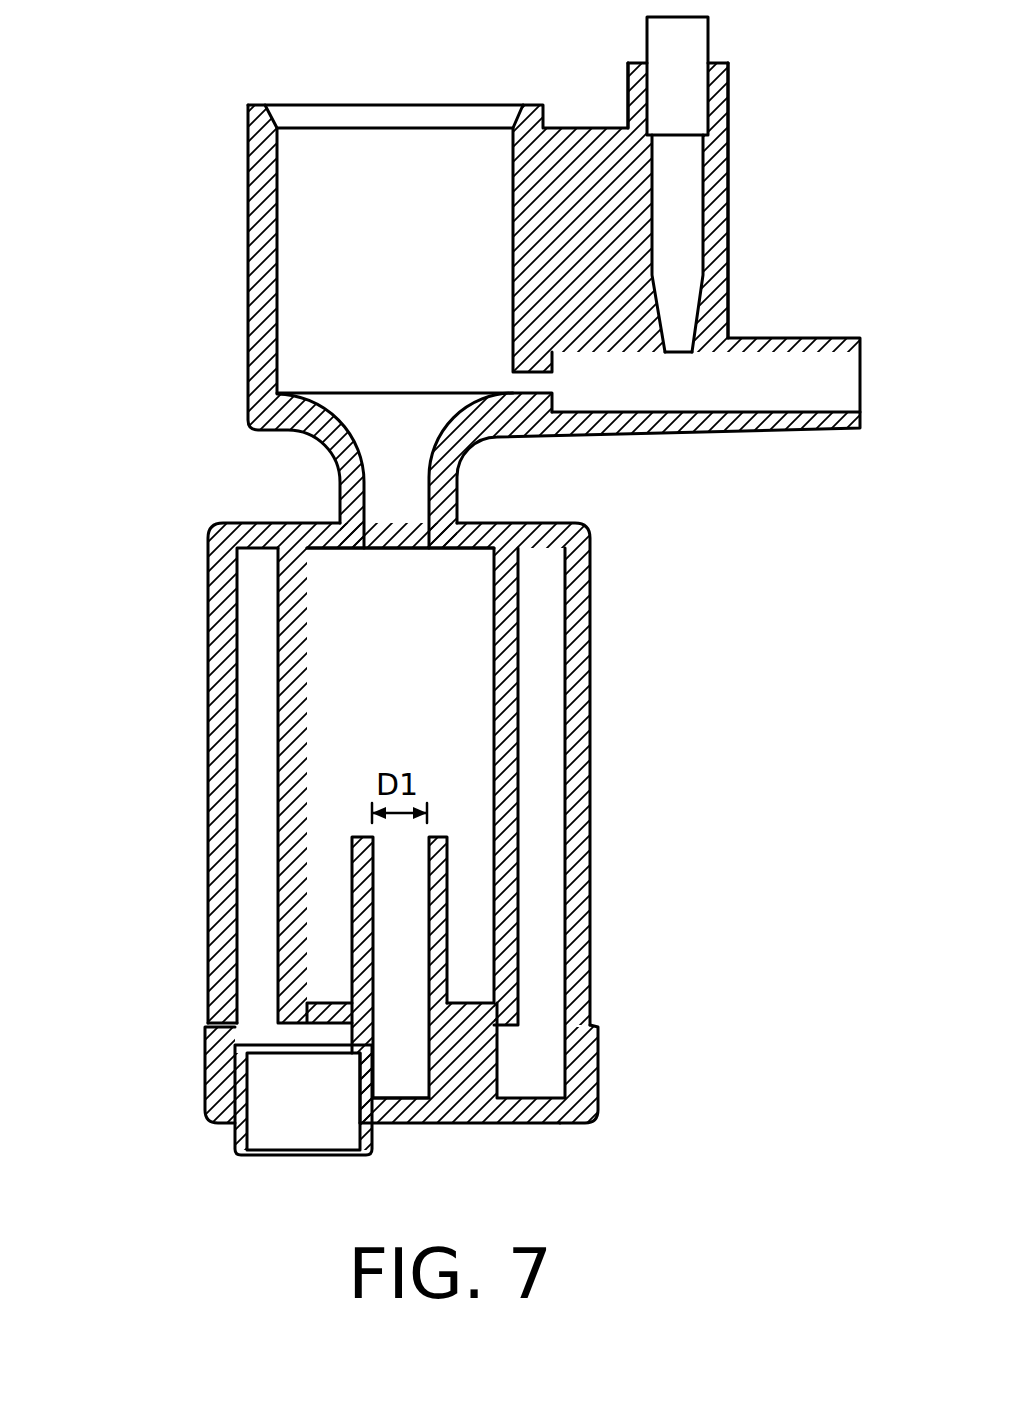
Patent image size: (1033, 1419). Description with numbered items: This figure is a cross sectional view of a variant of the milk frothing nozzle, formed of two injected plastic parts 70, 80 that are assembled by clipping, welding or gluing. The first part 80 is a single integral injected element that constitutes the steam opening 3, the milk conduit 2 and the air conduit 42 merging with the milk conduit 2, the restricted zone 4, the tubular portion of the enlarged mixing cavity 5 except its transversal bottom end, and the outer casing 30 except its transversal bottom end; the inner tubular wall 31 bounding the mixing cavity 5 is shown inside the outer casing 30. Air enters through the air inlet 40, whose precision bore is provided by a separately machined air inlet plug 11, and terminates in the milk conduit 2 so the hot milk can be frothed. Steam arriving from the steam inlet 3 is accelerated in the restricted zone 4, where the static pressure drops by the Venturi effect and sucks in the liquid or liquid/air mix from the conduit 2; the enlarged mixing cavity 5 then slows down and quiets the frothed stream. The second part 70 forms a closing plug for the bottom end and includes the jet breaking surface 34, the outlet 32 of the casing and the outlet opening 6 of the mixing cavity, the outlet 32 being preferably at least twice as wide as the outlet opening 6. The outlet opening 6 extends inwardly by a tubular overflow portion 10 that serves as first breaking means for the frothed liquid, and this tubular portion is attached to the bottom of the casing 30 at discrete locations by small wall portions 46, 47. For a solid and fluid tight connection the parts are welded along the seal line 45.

The milk conduit 2 is at (812, 365).
The steam inlet 3 is at (307, 132).
The restricted zone 4 is at (399, 547).
The enlarged mixing cavity 5 is at (478, 638).
The outlet opening 6 is at (417, 1048).
The tubular overflow portion 10 is at (447, 872).
The air inlet plug 11 is at (708, 35).
The outer casing 30 is at (598, 718).
The inner cylinder 31 is at (550, 811).
The outlet of the casing 32 is at (301, 1157).
The jet breaking surface 34 is at (440, 1125).
The air inlet 40 is at (728, 85).
The air conduit 42 is at (703, 218).
The seal line 45 is at (593, 1110).
The wall portion 46 is at (500, 1078).
The wall portion 47 is at (355, 1030).
The second part 70 is at (490, 1135).
The first part 80 is at (122, 105).